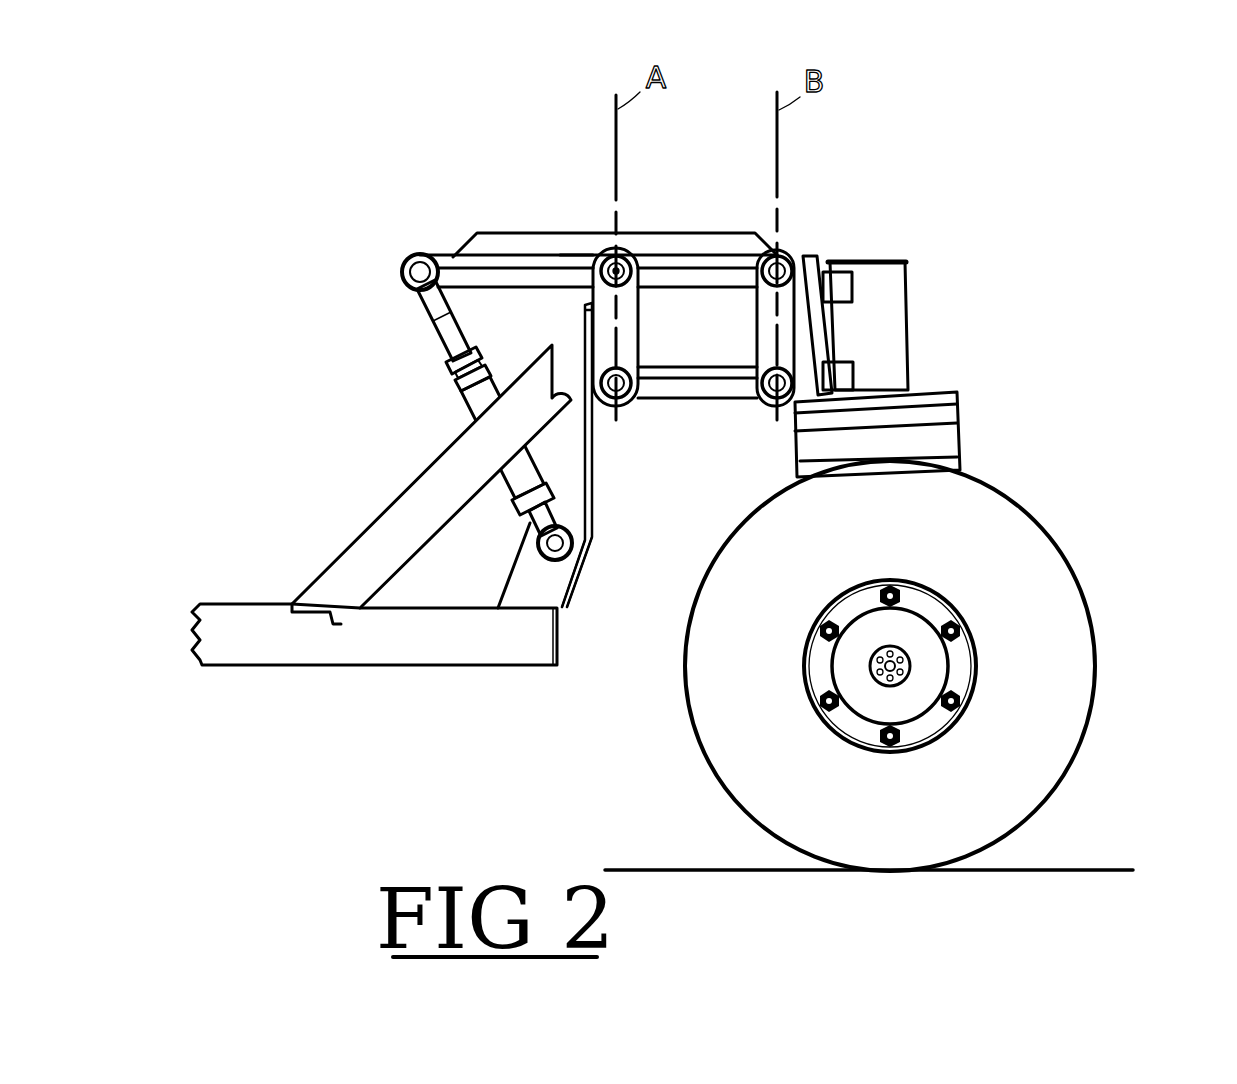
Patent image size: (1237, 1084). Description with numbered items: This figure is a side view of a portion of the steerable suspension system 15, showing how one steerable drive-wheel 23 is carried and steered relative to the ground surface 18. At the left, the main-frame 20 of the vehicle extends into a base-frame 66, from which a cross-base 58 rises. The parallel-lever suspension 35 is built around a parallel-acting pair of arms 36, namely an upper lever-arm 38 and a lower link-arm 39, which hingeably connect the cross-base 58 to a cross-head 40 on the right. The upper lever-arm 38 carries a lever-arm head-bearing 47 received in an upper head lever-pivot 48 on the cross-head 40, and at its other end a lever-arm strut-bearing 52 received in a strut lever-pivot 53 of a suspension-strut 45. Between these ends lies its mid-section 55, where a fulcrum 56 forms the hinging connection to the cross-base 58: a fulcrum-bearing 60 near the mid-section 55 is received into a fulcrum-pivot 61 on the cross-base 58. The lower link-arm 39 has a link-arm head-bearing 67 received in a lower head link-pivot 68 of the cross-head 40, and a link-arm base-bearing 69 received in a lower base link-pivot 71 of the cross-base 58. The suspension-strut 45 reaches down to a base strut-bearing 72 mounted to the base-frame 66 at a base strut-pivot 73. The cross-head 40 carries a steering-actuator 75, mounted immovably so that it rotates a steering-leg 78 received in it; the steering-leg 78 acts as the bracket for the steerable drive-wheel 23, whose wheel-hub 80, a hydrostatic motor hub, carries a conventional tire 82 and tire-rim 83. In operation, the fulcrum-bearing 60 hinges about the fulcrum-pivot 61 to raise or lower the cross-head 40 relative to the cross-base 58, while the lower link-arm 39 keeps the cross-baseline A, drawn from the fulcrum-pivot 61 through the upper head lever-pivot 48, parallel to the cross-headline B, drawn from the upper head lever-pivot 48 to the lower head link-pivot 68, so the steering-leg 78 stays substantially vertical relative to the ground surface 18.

The steerable suspension system 15 is at (320, 296).
The ground surface 18 is at (690, 868).
The main-frame 20 is at (250, 655).
The steerable drive-wheel 23 is at (921, 665).
The parallel-lever suspension 35 is at (552, 167).
The parallel-acting pair of arms 36 is at (699, 275).
The upper lever-arm 38 is at (720, 272).
The lower link-arm 39 is at (727, 390).
The cross-head 40 is at (843, 262).
The suspension-strut 45 is at (470, 407).
The lever-arm head-bearing 47 is at (803, 262).
The upper head lever-pivot 48 is at (777, 258).
The lever-arm strut-bearing 52 is at (418, 256).
The strut lever-pivot 53 is at (405, 270).
The mid-section 55 is at (590, 262).
The fulcrum 56 is at (632, 260).
The cross-base 58 is at (604, 330).
The fulcrum-bearing 60 is at (620, 262).
The fulcrum-pivot 61 is at (600, 260).
The base-frame 66 is at (527, 578).
The link-arm head-bearing 67 is at (778, 402).
The lower head link-pivot 68 is at (770, 392).
The link-arm base-bearing 69 is at (620, 398).
The lower base link-pivot 71 is at (618, 397).
The base strut-bearing 72 is at (572, 547).
The base strut-pivot 73 is at (562, 562).
The steering-actuator 75 is at (880, 330).
The steering-leg 78 is at (950, 445).
The wheel-hub 80 is at (940, 662).
The tire 82 is at (722, 722).
The tire-rim 83 is at (978, 660).